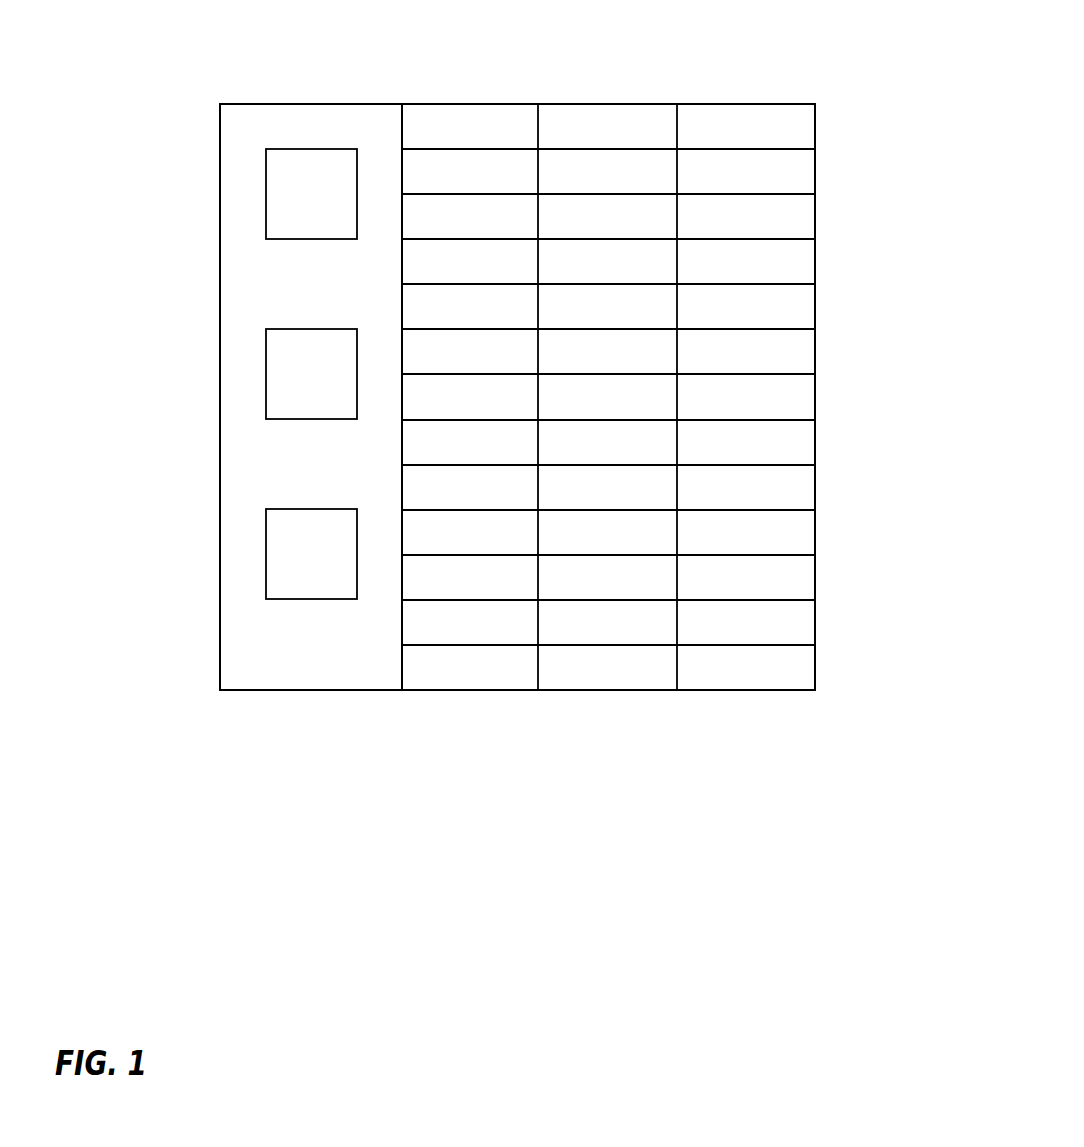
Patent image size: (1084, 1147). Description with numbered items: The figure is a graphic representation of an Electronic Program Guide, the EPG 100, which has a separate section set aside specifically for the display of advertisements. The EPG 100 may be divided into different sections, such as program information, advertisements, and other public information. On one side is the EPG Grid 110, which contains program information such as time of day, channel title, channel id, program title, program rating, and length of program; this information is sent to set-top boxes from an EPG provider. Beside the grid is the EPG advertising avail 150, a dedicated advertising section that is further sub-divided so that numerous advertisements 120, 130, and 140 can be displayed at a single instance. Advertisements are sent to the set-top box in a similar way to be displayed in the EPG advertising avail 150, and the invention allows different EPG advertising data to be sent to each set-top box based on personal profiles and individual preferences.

The Electronic Program Guide (EPG) 100 is at (474, 101).
The EPG Grid 110 is at (816, 303).
The advertisement 120 is at (266, 195).
The advertisement 130 is at (266, 379).
The advertisement 140 is at (266, 562).
The EPG advertising avail 150 is at (320, 120).